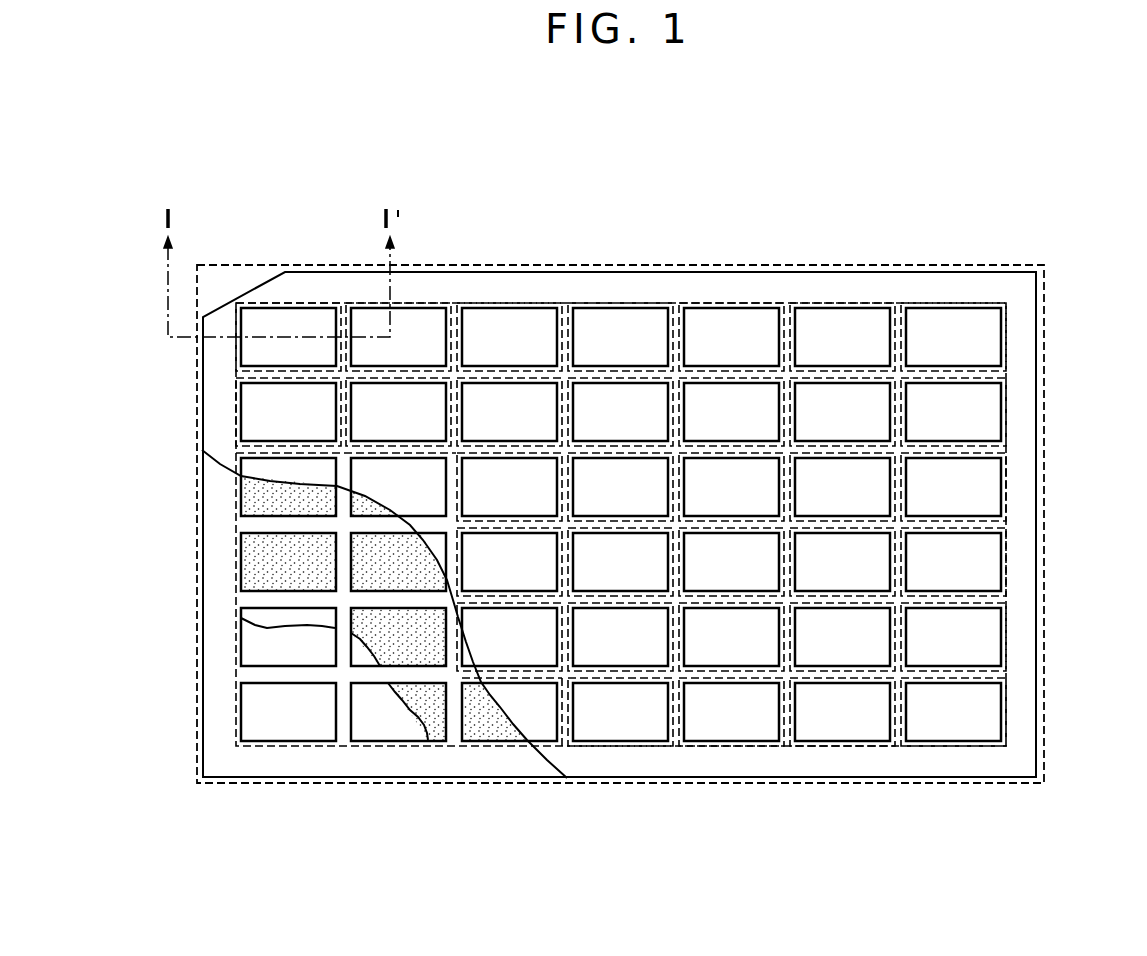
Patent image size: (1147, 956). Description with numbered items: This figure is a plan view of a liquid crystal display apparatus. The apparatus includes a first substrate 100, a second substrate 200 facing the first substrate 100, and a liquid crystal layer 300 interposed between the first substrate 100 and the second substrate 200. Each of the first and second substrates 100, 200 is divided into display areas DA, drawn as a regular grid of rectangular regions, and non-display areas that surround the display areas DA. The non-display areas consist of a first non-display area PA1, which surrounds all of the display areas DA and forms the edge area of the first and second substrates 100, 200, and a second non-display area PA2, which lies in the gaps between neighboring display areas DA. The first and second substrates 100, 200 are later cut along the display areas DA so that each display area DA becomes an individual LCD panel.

The first substrate 100 is at (288, 720).
The second substrate 200 is at (620, 757).
The liquid crystal layer 300 is at (438, 720).
The display areas DA is at (982, 615).
The first non-display area PA1 is at (1023, 387).
The second non-display area PA2 is at (900, 735).